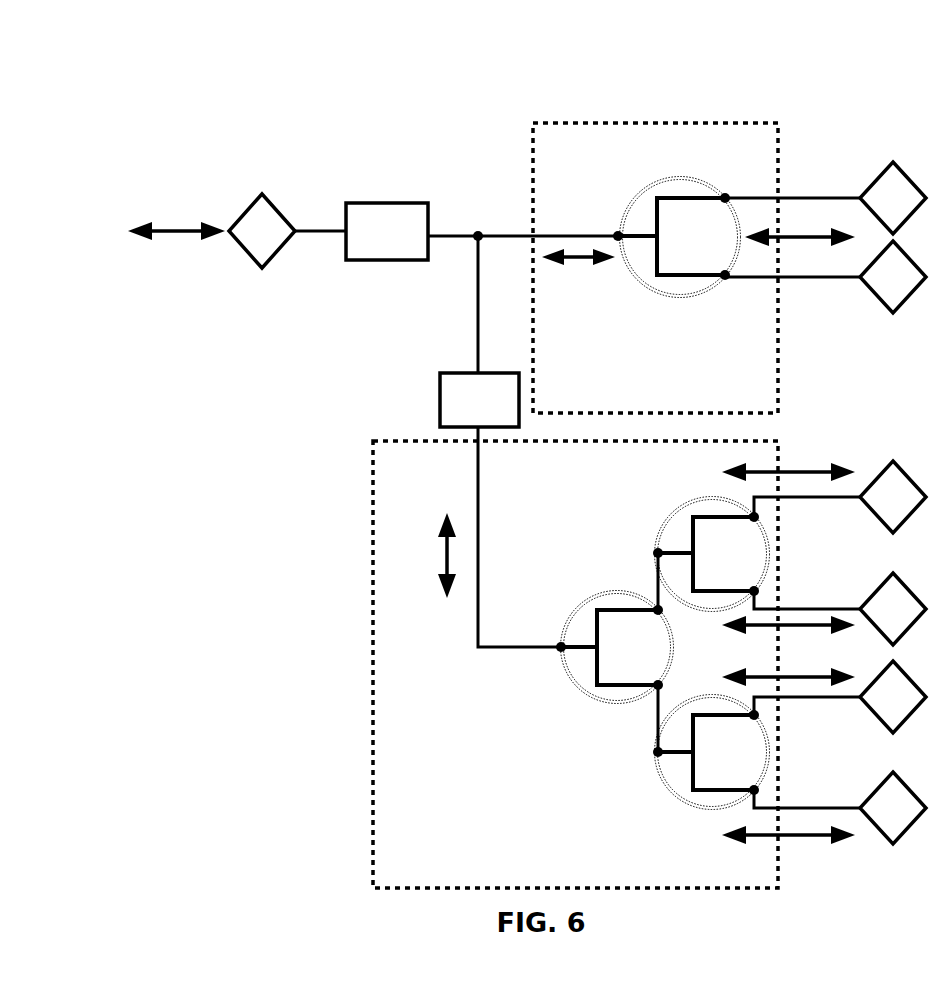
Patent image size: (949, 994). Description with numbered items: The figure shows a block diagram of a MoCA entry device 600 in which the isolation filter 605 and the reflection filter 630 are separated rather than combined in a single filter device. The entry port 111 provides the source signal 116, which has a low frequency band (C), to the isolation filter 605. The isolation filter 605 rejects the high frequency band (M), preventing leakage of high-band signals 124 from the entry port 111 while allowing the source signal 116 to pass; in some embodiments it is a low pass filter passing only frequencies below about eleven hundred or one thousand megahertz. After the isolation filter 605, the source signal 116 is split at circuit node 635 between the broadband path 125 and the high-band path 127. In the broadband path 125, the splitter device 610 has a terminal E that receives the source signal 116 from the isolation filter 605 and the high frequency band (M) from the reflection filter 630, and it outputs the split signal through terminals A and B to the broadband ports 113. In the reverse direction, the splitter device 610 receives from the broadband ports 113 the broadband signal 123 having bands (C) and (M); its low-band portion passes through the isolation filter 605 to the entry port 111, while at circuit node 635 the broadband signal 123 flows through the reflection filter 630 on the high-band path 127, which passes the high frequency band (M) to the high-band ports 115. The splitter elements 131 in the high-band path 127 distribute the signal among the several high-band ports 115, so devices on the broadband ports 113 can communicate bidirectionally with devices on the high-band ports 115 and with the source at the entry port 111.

The MoCA entry device 600 is at (508, 82).
The source signal 116 is at (183, 226).
The entry port 111 is at (262, 231).
The isolation filter 605 is at (387, 231).
The circuit node 635 is at (479, 233).
The splitter device 610 is at (640, 196).
The broadband signal 123 is at (585, 263).
The broadband ports 113 is at (893, 237).
The broadband path 125 is at (655, 268).
The reflection filter 630 is at (479, 400).
The high-band path 127 is at (575, 664).
The high-band signals 124 is at (441, 586).
The switch 131 is at (600, 594).
The high-band ports 115 is at (893, 652).